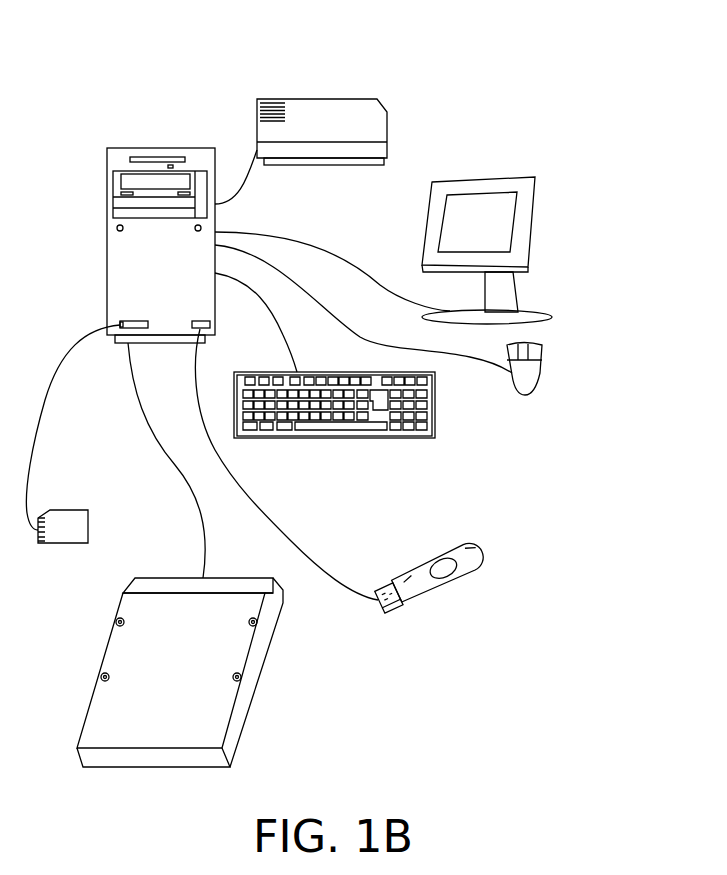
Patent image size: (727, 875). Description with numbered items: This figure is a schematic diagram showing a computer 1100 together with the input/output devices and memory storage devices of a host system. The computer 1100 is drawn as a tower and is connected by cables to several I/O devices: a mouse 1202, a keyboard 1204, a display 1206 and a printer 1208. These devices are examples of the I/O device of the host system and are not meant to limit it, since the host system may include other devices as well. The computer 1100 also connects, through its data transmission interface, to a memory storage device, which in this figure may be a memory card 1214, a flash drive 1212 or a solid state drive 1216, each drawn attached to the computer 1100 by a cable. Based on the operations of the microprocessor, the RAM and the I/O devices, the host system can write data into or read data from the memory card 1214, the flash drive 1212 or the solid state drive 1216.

The computer 1100 is at (158, 147).
The printer 1208 is at (317, 98).
The display 1206 is at (488, 176).
The mouse 1202 is at (542, 370).
The keyboard 1204 is at (435, 417).
The memory card 1214 is at (88, 517).
The solid state drive 1216 is at (228, 572).
The flash drive 1212 is at (430, 560).